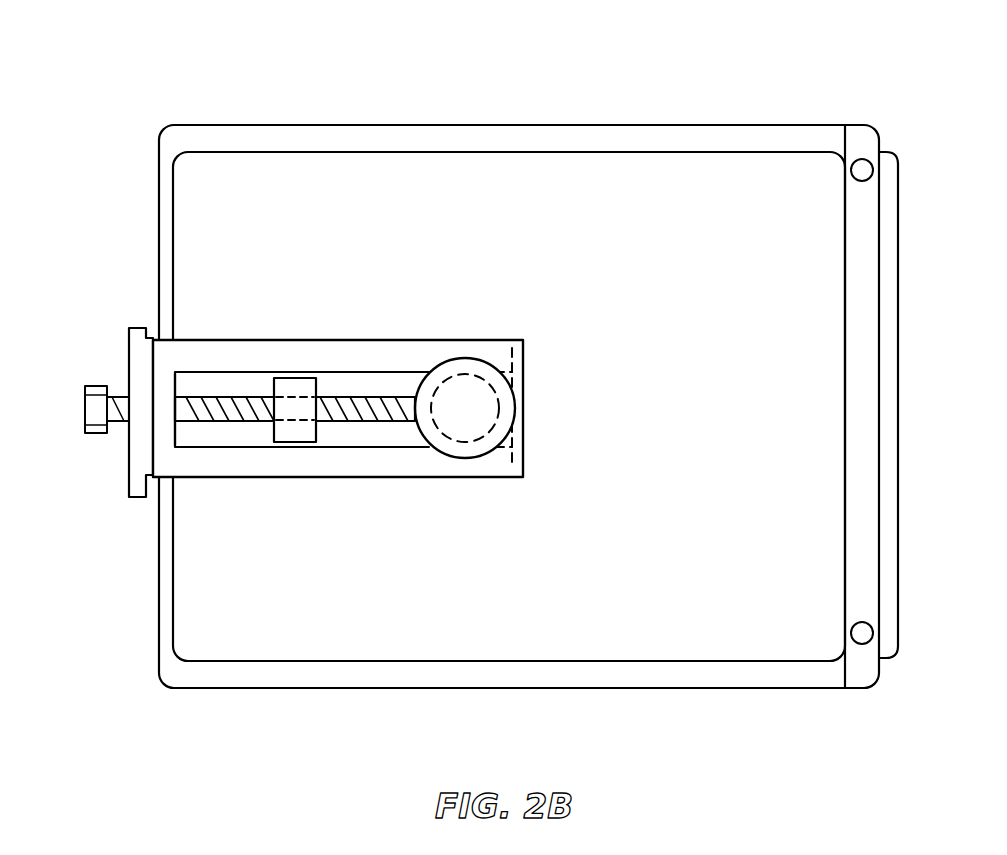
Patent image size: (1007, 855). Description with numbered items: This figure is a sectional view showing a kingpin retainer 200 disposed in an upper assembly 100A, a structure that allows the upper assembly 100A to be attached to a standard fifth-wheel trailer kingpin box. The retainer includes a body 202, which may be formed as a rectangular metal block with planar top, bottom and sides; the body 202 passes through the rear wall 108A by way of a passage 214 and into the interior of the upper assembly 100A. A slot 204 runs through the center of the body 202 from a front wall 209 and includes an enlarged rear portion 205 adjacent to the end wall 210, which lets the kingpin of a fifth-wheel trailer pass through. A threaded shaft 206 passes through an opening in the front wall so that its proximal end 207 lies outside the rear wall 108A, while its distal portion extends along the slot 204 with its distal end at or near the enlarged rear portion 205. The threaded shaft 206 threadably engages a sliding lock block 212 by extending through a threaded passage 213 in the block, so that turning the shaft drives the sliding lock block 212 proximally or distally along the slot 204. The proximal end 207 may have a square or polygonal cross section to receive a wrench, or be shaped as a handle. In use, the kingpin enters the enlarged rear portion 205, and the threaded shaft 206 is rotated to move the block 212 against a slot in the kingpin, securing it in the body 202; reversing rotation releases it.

The upper assembly 100A is at (729, 110).
The rear wall 108A is at (163, 563).
The kingpin retainer 200 is at (405, 340).
The body 202 is at (513, 465).
The slot 204 is at (347, 386).
The enlarged rear portion 205 is at (478, 358).
The threaded shaft 206 is at (382, 414).
The proximal end 207 is at (85, 412).
The front wall 209 is at (178, 382).
The end wall 210 is at (514, 392).
The sliding lock block 212 is at (301, 434).
The threaded passage 213 is at (287, 411).
The passage 214 is at (155, 337).